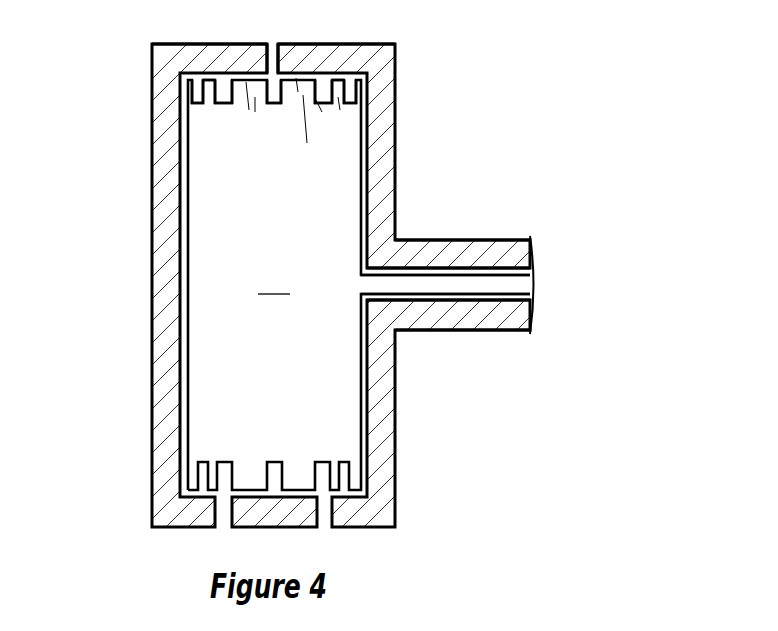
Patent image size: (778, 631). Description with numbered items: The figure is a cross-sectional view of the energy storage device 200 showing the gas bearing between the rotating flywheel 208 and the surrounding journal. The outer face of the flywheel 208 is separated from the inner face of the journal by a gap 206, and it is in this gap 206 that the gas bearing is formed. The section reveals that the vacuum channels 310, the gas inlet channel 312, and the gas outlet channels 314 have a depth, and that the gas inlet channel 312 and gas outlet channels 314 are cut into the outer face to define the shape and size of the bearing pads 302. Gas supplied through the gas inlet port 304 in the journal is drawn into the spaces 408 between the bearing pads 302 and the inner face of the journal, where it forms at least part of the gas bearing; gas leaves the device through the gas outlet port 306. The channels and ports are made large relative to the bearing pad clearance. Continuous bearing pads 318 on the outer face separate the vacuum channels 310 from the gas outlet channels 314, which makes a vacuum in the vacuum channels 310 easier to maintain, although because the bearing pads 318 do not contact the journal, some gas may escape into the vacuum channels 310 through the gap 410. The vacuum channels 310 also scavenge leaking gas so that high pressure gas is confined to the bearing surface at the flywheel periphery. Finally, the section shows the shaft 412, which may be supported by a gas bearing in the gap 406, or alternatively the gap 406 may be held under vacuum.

The energy storage device 200 is at (560, 116).
The gap 206 is at (374, 75).
The flywheel 208 is at (274, 283).
The bearing pads 302 is at (258, 84).
The gas inlet port 304 is at (273, 50).
The gas outlet port 306 is at (223, 515).
The vacuum channels 310 is at (199, 105).
The gas inlet channel 312 is at (306, 110).
The gas outlet channels 314 is at (223, 105).
The bearing pads 318 is at (209, 99).
The gap 406 is at (457, 268).
The spaces 408 is at (247, 104).
The gap 410 is at (212, 70).
The shaft 412 is at (517, 287).